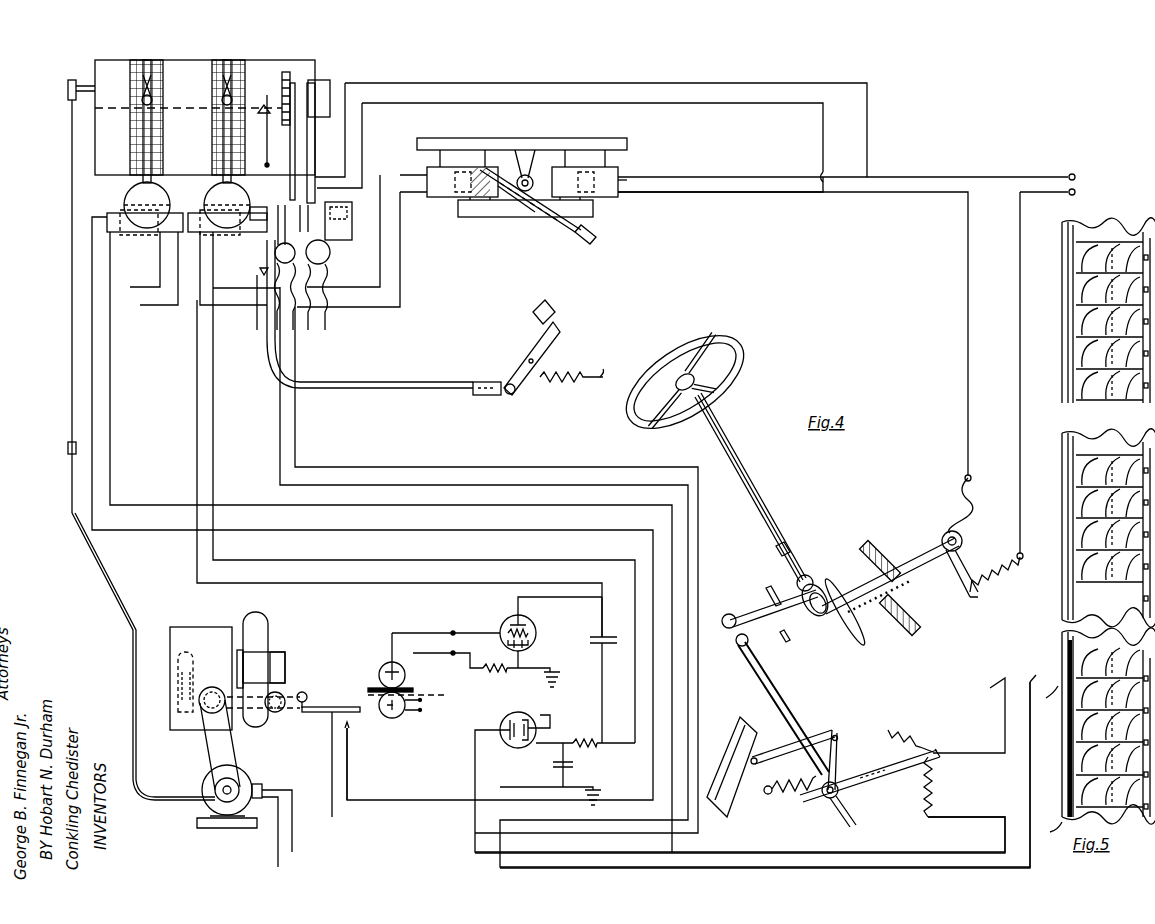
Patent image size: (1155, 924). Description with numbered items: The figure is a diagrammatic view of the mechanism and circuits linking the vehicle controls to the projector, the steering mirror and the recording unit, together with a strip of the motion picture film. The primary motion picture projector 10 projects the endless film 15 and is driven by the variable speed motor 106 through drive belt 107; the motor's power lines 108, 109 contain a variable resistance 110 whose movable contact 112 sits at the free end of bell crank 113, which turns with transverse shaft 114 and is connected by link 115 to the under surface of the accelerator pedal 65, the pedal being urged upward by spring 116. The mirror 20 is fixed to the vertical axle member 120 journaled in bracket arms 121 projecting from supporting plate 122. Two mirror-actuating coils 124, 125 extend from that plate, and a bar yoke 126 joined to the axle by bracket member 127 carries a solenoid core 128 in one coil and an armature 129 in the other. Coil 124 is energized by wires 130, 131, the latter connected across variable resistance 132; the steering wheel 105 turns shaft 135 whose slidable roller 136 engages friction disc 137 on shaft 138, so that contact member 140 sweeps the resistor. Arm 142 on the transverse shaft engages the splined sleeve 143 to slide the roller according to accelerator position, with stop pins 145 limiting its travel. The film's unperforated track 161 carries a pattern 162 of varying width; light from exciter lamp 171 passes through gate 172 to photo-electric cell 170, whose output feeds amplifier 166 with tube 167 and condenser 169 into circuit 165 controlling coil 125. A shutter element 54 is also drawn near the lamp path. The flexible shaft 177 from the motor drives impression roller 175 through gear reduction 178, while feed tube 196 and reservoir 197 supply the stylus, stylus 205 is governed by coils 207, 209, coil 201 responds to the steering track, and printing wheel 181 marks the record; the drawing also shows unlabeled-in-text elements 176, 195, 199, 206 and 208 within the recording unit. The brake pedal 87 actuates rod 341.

In FIG. 4, the motion picture projector 10 is at (206, 626).
In FIG. 4, the endless film 15 is at (270, 637).
In FIG. 4, the mirror 20 is at (588, 244).
In FIG. 4, the shutter 54 is at (310, 712).
In FIG. 4, the accelerator pedal 65 is at (734, 749).
In FIG. 4, the brake pedal 87 is at (540, 303).
In FIG. 4, the steering wheel 105 is at (744, 352).
In FIG. 4, the variable speed motor 106 is at (208, 775).
In FIG. 4, the drive belt 107 is at (232, 745).
In FIG. 4, the power line 108 is at (1035, 678).
In FIG. 4, the power line 109 is at (1002, 687).
In FIG. 4, the variable resistance 110 is at (938, 790).
In FIG. 4, the movable contact 112 is at (936, 740).
In FIG. 4, the bell crank 113 is at (840, 744).
In FIG. 4, the transverse shaft 114 is at (776, 680).
In FIG. 4, the link 115 is at (768, 745).
In FIG. 4, the spring 116 is at (778, 806).
In FIG. 4, the vertical axle member 120 is at (502, 220).
In FIG. 4, the bracket arms 121 is at (535, 156).
In FIG. 4, the supporting plate 122 is at (508, 147).
In FIG. 4, the mirror-actuating coil 124 is at (618, 167).
In FIG. 4, the mirror-actuating coil 125 is at (442, 197).
In FIG. 4, the bar yoke 126 is at (475, 220).
In FIG. 4, the bracket member 127 is at (516, 215).
In FIG. 4, the solenoid core 128 is at (598, 200).
In FIG. 4, the armature 129 is at (458, 220).
In FIG. 4, the wire 130 is at (1070, 175).
In FIG. 4, the wire 131 is at (1080, 193).
In FIG. 4, the variable resistance 132 is at (984, 580).
In FIG. 4, the shaft 135 is at (795, 526).
In FIG. 4, the slidable roller 136 is at (818, 620).
In FIG. 4, the friction disc 137 is at (873, 640).
In FIG. 4, the shaft 138 is at (897, 554).
In FIG. 4, the contact member 140 is at (977, 538).
In FIG. 4, the arm 142 is at (735, 615).
In FIG. 4, the splined sleeve 143 is at (815, 574).
In FIG. 4, the stop pins 145 is at (793, 648).
In FIG. 5, the track 161 is at (1058, 363).
In FIG. 5, the pattern 162 is at (1060, 478).
In FIG. 4, the circuit 165 is at (196, 424).
In FIG. 4, the amplifier 166 is at (503, 620).
In FIG. 4, the tube 167 is at (534, 623).
In FIG. 4, the condenser 169 is at (580, 672).
In FIG. 4, the photo-electric cell 170 is at (386, 665).
In FIG. 4, the exciter lamp 171 is at (383, 720).
In FIG. 4, the gate 172 is at (413, 688).
In FIG. 4, the impression roller 175 is at (95, 74).
In FIG. 4, the pipe 176 is at (71, 105).
In FIG. 4, the flexible shaft 177 is at (70, 312).
In FIG. 4, the worm and pinion gear reduction 178 is at (68, 87).
In FIG. 4, the printing wheel 181 is at (313, 75).
In FIG. 4, the scale 195 is at (285, 52).
In FIG. 4, the feed tube 196 is at (225, 122).
In FIG. 4, the reservoir 197 is at (210, 200).
In FIG. 4, the valve 199 is at (262, 235).
In FIG. 4, the coil 201 is at (208, 240).
In FIG. 4, the stylus 205 is at (152, 80).
In FIG. 4, the conductor 206 is at (94, 370).
In FIG. 4, the controlling coil 207 is at (113, 225).
In FIG. 4, the float 208 is at (124, 193).
In FIG. 4, the controlling coil 209 is at (162, 250).
In FIG. 4, the rod 341 is at (335, 396).